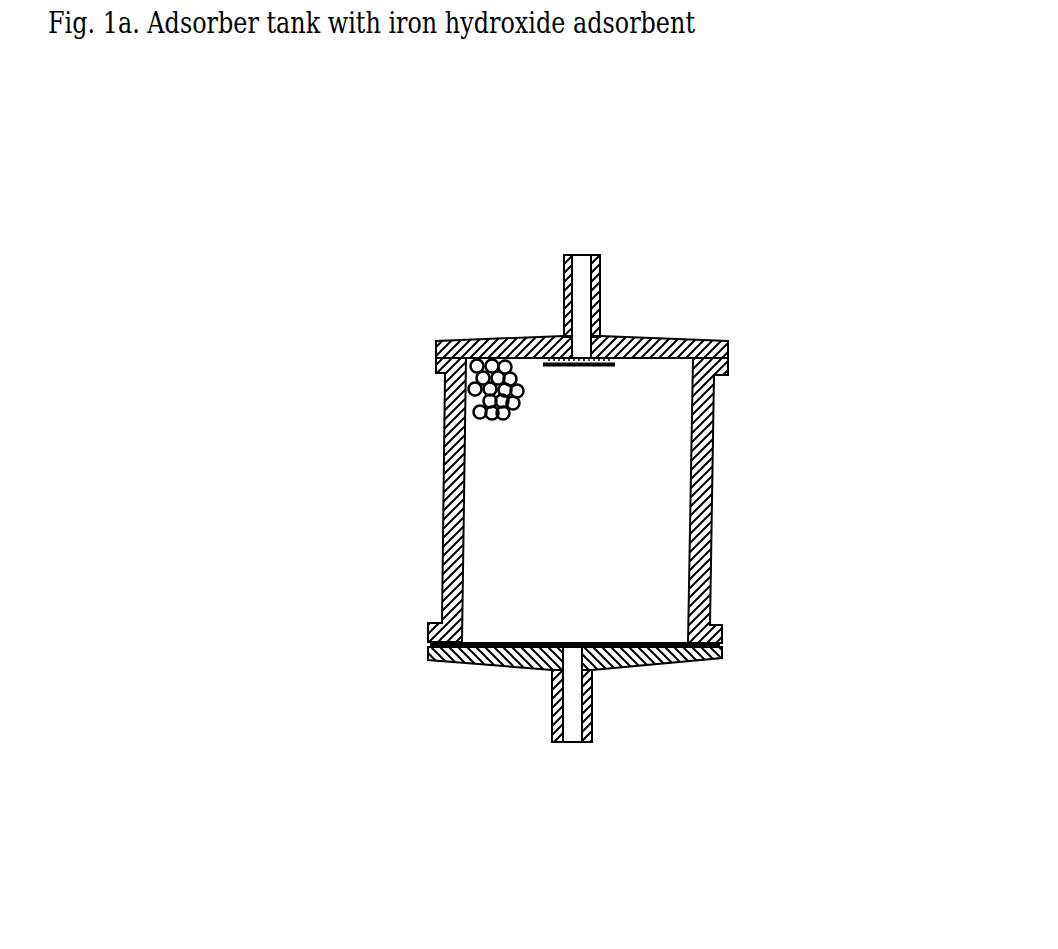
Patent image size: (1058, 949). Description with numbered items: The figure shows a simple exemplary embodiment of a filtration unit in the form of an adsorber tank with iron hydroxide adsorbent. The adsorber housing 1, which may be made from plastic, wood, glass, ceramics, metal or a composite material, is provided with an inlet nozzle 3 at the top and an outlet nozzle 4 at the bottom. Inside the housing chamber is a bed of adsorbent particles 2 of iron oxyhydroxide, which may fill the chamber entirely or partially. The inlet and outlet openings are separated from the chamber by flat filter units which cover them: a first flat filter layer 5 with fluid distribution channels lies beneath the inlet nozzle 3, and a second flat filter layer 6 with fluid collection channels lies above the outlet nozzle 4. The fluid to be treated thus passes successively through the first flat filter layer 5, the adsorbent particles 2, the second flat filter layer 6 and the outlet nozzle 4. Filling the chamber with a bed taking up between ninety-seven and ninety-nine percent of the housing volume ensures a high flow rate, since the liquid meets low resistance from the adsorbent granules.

The adsorber housing 1 is at (433, 573).
The adsorbent particles 2 is at (467, 402).
The inlet nozzle 3 is at (583, 245).
The outlet nozzle 4 is at (568, 745).
The first flat filter layer with fluid distribution channels 5 is at (613, 378).
The second flat filter layer with fluid collection channels 6 is at (657, 623).